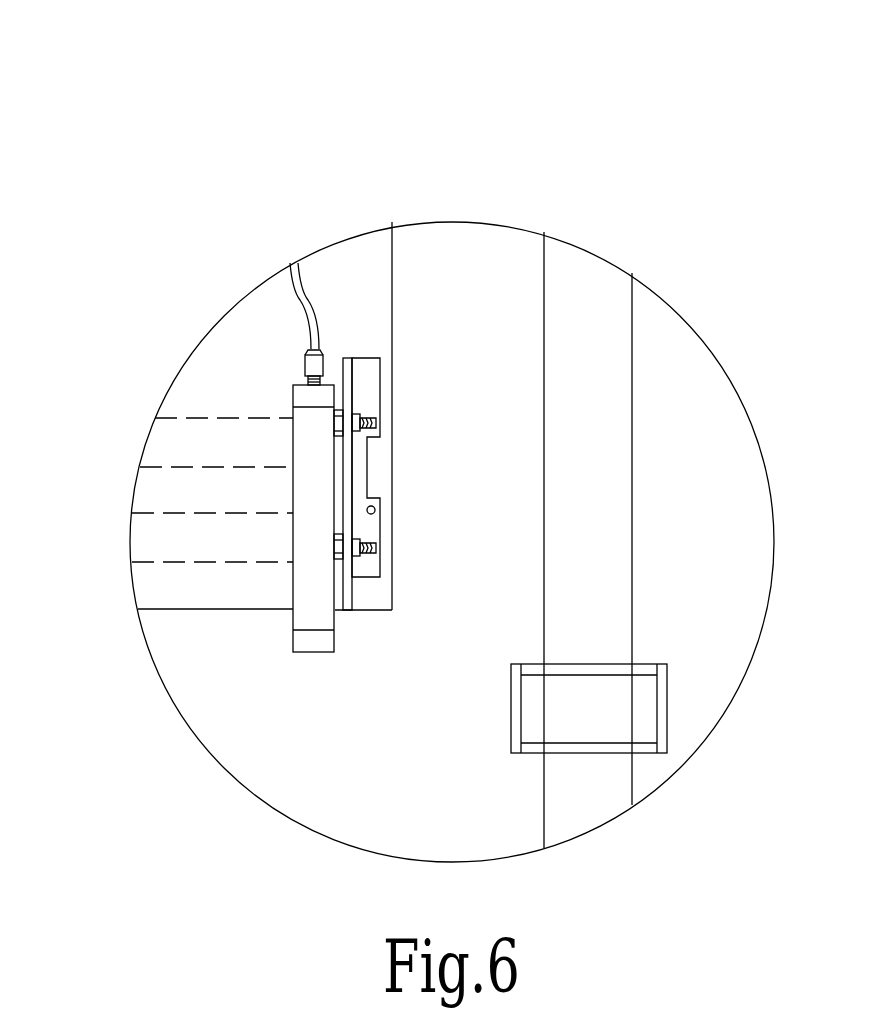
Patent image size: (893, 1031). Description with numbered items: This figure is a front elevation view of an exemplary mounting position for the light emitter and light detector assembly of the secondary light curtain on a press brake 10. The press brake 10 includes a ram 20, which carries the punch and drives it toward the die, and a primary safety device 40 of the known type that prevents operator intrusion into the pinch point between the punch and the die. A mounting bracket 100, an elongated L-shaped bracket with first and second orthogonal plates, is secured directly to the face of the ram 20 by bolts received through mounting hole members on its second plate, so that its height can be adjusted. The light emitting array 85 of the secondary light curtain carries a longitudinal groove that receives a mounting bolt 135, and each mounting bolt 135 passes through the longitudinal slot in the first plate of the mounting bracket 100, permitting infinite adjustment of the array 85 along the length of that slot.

The press brake 10 is at (222, 140).
The ram 20 is at (217, 373).
The primary safety device 40 is at (650, 652).
The light emitting array 85 is at (313, 632).
The mounting bracket 100 is at (372, 578).
The mounting bolt 135 is at (363, 416).